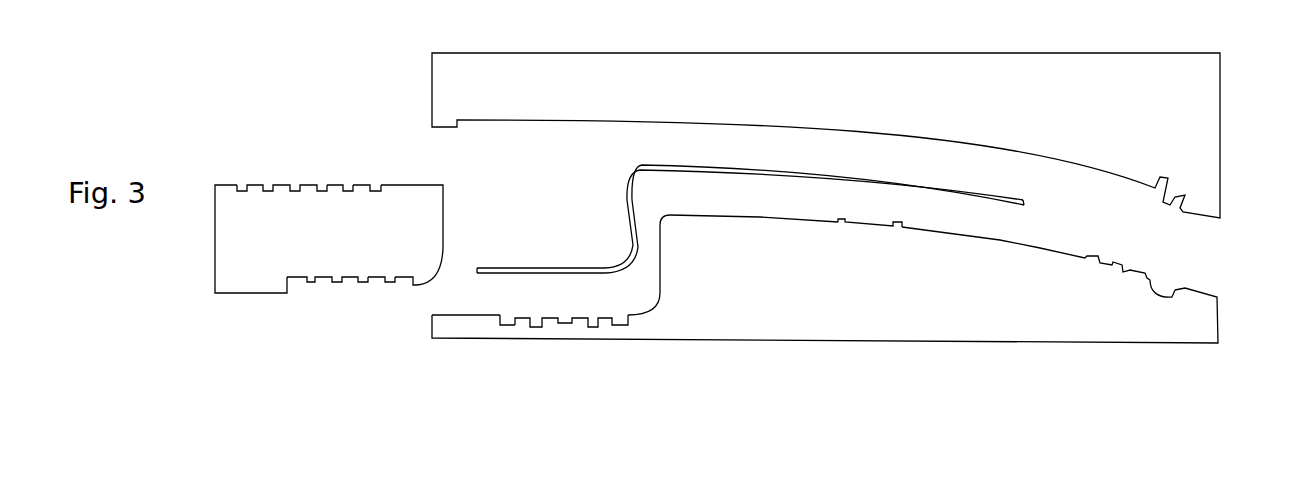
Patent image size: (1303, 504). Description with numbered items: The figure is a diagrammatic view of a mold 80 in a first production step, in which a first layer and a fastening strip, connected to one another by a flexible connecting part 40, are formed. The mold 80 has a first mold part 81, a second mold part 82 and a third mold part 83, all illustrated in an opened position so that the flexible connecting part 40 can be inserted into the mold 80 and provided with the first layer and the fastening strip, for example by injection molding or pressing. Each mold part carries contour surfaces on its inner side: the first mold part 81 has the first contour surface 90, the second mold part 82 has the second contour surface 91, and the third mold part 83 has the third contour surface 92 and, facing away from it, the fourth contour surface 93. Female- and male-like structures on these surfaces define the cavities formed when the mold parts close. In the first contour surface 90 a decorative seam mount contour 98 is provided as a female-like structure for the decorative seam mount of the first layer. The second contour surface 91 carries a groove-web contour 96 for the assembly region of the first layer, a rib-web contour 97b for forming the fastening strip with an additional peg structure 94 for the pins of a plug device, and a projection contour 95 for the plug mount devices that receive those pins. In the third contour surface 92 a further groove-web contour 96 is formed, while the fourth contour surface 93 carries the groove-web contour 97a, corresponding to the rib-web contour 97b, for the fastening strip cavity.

The mold 80 is at (882, 44).
The first mold part 81 is at (855, 101).
The second mold part 82 is at (941, 299).
The third mold part 83 is at (311, 240).
The first contour surface 90 is at (678, 113).
The second contour surface 91 is at (719, 232).
The third contour surface 92 is at (265, 177).
The fourth contour surface 93 is at (315, 298).
The peg structure 94 is at (537, 328).
The projection contour 95 is at (843, 230).
The groove-web contour 96 is at (1122, 267).
The groove-web contour 97a is at (375, 284).
The rib-web contour 97b is at (505, 327).
The decorative seam mount contour 98 is at (1170, 208).
The flexible connecting part 40 is at (866, 171).